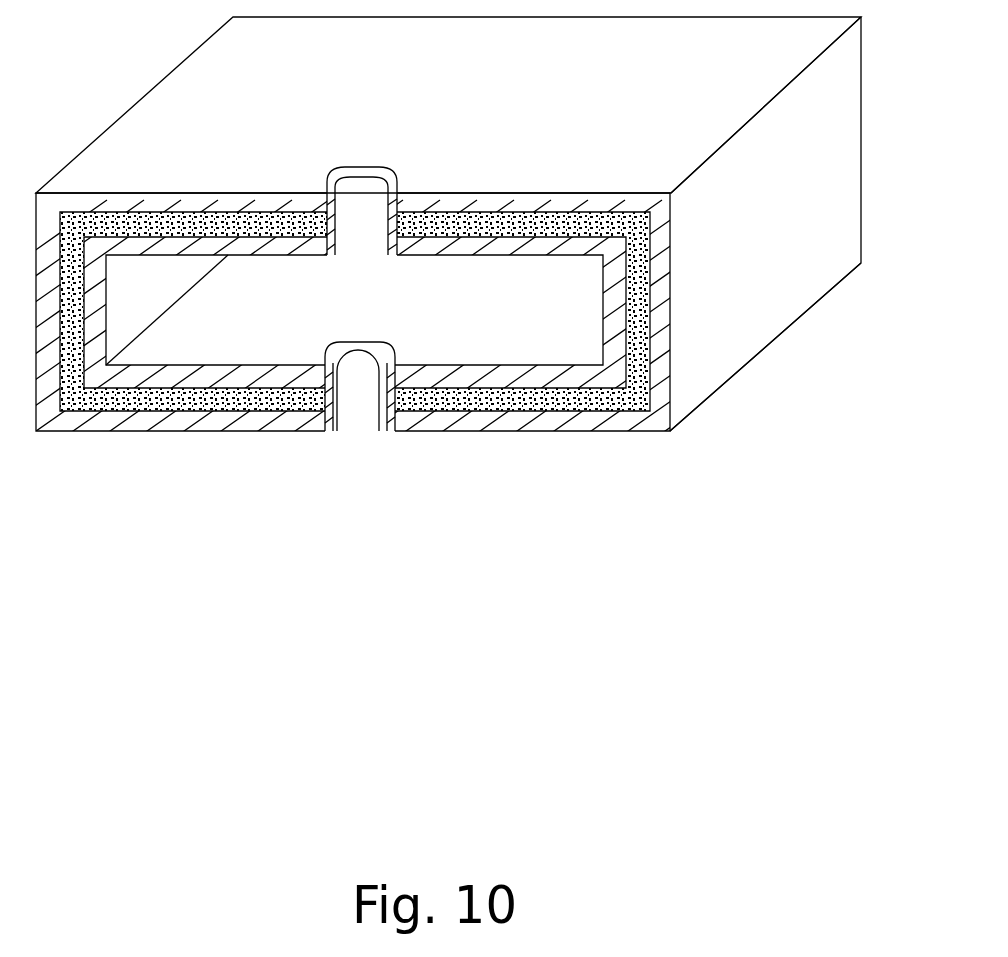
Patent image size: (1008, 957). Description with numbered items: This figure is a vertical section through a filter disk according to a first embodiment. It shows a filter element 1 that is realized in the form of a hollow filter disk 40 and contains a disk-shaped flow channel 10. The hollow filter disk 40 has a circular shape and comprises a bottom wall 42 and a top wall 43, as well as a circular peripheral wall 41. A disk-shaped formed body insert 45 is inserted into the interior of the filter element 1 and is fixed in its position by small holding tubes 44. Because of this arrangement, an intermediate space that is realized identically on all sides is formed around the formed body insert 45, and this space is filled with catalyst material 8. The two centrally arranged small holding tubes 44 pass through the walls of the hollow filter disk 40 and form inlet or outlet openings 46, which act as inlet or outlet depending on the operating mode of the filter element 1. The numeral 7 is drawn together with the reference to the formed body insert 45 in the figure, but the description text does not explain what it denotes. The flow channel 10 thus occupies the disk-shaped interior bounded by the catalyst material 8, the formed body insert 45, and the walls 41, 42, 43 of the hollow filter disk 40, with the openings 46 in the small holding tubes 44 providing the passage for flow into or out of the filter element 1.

The filter element 1 is at (448, 287).
The hollow filter disk 40 is at (143, 433).
The circular peripheral wall 41 is at (672, 327).
The bottom wall 42 is at (500, 433).
The top wall 43 is at (573, 200).
The small holding tube 44 is at (326, 193).
The formed body insert 45 is at (570, 400).
The inlet or outlet opening 46 is at (380, 192).
The inner wall 7 is at (504, 379).
The catalyst material 8 is at (670, 436).
The flow channel 10 is at (210, 348).